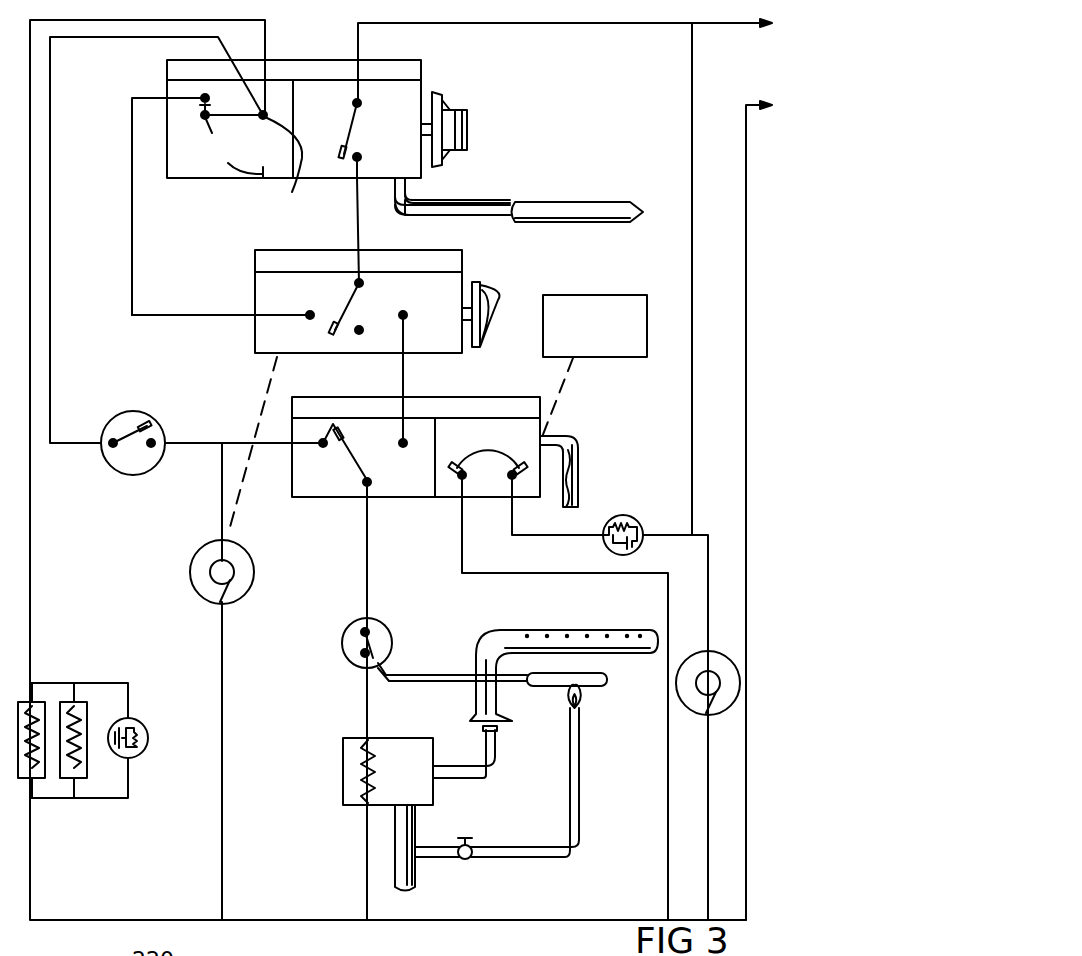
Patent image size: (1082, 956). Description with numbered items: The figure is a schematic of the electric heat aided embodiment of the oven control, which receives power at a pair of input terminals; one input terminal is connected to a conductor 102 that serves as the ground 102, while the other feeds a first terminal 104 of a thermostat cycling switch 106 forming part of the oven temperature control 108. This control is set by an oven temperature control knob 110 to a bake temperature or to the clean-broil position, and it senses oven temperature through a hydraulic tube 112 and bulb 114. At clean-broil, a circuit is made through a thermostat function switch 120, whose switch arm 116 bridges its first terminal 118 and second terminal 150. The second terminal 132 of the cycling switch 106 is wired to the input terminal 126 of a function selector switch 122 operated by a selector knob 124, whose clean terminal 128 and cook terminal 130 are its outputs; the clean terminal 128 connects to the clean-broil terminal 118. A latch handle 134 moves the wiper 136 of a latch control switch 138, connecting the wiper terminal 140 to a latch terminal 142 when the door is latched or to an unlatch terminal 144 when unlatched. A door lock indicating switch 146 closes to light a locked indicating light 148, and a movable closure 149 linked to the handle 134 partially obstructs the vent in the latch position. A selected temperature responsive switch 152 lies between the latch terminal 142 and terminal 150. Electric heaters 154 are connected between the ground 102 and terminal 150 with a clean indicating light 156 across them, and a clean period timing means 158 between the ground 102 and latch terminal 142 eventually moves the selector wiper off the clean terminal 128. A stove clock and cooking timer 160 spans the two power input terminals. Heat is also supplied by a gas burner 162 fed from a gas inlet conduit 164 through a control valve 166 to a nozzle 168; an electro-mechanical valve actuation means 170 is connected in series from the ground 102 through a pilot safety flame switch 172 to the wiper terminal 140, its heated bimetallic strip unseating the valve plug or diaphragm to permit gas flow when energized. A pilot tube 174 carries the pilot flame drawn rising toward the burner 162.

The conductor 102 is at (257, 916).
The first terminal 104 is at (362, 103).
The thermostat cycling switch 106 is at (345, 96).
The oven temperature control 108 is at (308, 62).
The oven temperature control knob 110 is at (460, 121).
The hydraulic tube 112 is at (452, 213).
The bulb 114 is at (604, 209).
The switch arm 116 is at (200, 117).
The first terminal 118 is at (200, 97).
The thermostat function switch 120 is at (282, 88).
The function selector switch 122 is at (281, 258).
The selector knob 124 is at (492, 298).
The input terminal 126 is at (356, 281).
The clean terminal 128 is at (308, 314).
The cook terminal 130 is at (405, 313).
The second terminal 132 is at (359, 160).
The latch handle 134 is at (580, 469).
The wiper 136 is at (334, 434).
The latch control switch 138 is at (418, 433).
The wiper terminal 140 is at (368, 485).
The latch terminal 142 is at (320, 445).
The unlatch terminal 144 is at (402, 442).
The door lock indicating switch 146 is at (512, 456).
The locked indicating light 148 is at (641, 527).
The movable closure 149 is at (598, 296).
The second terminal 150 is at (286, 165).
The selected temperature responsive switch 152 is at (140, 426).
The electric heaters 154 is at (70, 702).
The clean indicating light 156 is at (148, 735).
The clean period timing means 158 is at (190, 573).
The stove clock and cooking timer 160 is at (740, 684).
The gas burner 162 is at (582, 632).
The gas inlet conduit 164 is at (416, 873).
The control valve 166 is at (340, 752).
The nozzle 168 is at (494, 728).
The valve actuation means 170 is at (356, 787).
The pilot safety flame switch 172 is at (392, 640).
The pilot tube 174 is at (580, 778).